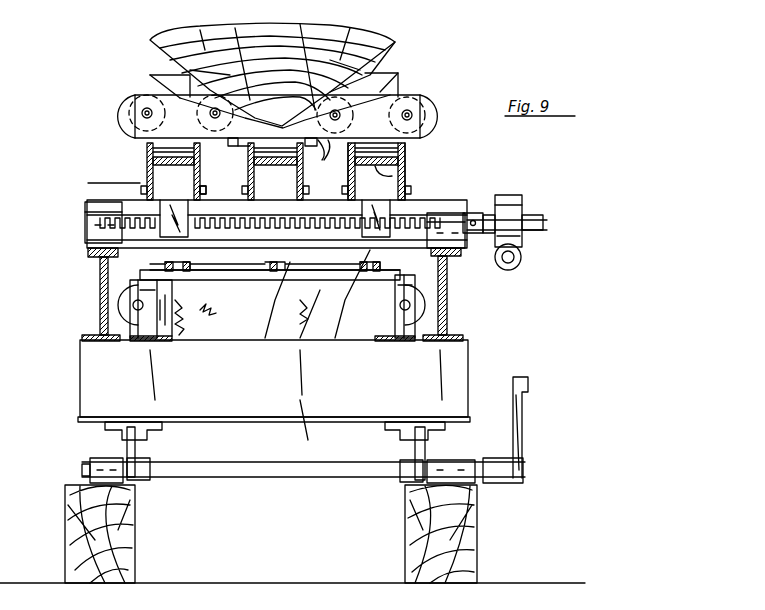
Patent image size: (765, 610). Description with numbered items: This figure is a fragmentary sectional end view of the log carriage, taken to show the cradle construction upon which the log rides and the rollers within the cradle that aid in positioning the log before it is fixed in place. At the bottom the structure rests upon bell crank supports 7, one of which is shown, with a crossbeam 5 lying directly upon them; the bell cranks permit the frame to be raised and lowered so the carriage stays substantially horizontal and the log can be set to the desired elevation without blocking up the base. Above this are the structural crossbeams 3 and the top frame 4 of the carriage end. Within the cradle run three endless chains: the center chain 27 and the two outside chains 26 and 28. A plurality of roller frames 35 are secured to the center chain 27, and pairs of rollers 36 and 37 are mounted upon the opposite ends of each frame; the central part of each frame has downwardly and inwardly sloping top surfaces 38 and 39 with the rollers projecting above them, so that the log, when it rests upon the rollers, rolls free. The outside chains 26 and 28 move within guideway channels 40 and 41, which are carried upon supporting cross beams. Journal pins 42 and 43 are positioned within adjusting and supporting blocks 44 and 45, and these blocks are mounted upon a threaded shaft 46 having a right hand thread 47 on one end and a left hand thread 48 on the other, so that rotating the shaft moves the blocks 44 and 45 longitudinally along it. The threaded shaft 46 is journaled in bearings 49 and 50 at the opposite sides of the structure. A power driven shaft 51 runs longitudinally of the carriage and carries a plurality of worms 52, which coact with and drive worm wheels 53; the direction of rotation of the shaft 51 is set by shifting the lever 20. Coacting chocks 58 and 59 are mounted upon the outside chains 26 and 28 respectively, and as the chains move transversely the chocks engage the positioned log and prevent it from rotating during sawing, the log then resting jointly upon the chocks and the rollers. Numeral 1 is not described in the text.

The log support block 1 is at (122, 522).
The crossbeams 3 is at (383, 300).
The top frame 4 is at (398, 170).
The crossbeam 5 is at (262, 410).
The bell crank support 7 is at (137, 455).
The shift lever 20 is at (195, 268).
The endless chain 26 is at (400, 155).
The endless chain 27 is at (260, 165).
The endless chain 28 is at (152, 165).
The roller frame 35 is at (382, 115).
The roller 36 is at (385, 100).
The roller 37 is at (160, 98).
The sloping top surface 38 is at (248, 150).
The sloping top surface 39 is at (320, 159).
The guideway channel 40 is at (395, 181).
The guideway channel 41 is at (140, 181).
The journal pin 42 is at (208, 190).
The journal pin 43 is at (410, 193).
The adjusting and supporting block 44 is at (157, 238).
The adjusting and supporting block 45 is at (338, 338).
The threaded shaft 46 is at (265, 338).
The right hand thread 47 is at (300, 338).
The left hand thread 48 is at (150, 240).
The bearing 49 is at (92, 250).
The bearing 50 is at (462, 256).
The power driven shaft 51 is at (521, 257).
The worm 52 is at (525, 242).
The worm wheel 53 is at (535, 226).
The chock 58 is at (300, 117).
The chock 59 is at (158, 88).